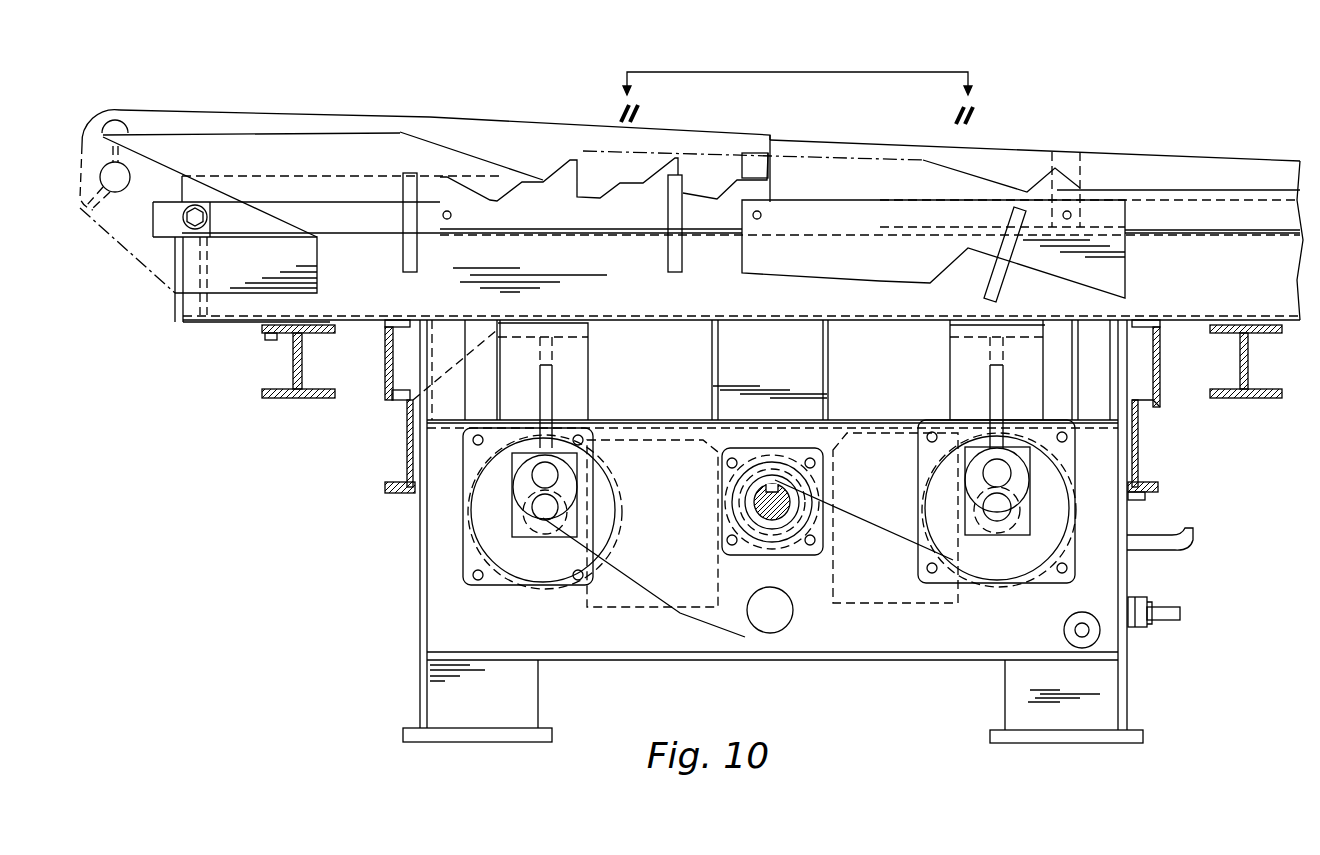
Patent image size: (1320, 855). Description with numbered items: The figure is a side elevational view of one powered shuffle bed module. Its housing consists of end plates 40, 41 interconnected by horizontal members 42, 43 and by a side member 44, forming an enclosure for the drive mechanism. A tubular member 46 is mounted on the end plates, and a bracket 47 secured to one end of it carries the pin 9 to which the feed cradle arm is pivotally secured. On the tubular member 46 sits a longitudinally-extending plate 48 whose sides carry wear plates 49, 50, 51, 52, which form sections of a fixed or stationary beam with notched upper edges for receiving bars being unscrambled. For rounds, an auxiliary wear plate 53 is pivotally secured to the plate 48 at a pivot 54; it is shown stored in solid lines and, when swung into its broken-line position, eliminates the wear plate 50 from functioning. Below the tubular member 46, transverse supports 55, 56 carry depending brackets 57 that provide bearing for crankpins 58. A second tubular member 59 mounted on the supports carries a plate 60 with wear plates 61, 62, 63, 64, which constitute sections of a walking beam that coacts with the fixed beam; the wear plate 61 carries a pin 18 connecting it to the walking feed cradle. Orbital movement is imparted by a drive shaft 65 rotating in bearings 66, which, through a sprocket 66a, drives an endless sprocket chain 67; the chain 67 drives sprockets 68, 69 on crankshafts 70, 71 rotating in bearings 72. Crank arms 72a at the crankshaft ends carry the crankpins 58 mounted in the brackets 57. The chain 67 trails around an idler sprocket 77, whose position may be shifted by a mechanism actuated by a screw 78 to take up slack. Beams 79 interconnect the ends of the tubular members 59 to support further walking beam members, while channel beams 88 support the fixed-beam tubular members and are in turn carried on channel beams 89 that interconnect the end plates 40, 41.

The pin 9 is at (115, 187).
The pin 18 is at (123, 122).
The end plate 40 is at (418, 610).
The end plate 41 is at (1128, 583).
The horizontal member 42 is at (642, 422).
The horizontal member 43 is at (645, 663).
The side member 44 is at (895, 630).
The tubular member 46 is at (362, 303).
The bracket 47 is at (153, 255).
The longitudinally-extending plate 48 is at (302, 198).
The wear plate 49 is at (250, 132).
The wear plate 50 is at (490, 200).
The wear plate 51 is at (827, 157).
The wear plate 52 is at (1107, 188).
The auxiliary wear plate 53 is at (512, 177).
The pivot 54 is at (758, 212).
The support 55 is at (590, 327).
The support 56 is at (950, 332).
The depending bracket 57 is at (588, 393).
The crankpin 58 is at (537, 473).
The second tubular member 59 is at (240, 323).
The longitudinally-extending plate 60 is at (277, 175).
The wear plate 61 is at (405, 115).
The wear plate 62 is at (478, 122).
The wear plate 63 is at (890, 143).
The wear plate 64 is at (1182, 153).
The drive shaft 65 is at (777, 515).
The bearing 66 is at (748, 532).
The sprocket 66a is at (823, 540).
The sprocket chain 67 is at (703, 617).
The sprocket 68 is at (585, 605).
The sprocket 69 is at (1005, 580).
The crankshaft 70 is at (543, 518).
The crankshaft 71 is at (1007, 503).
The bearing 72 is at (567, 532).
The crank arm 72a is at (513, 530).
The idler sprocket 77 is at (742, 602).
The screw 78 is at (1167, 607).
The beam 79 is at (290, 367).
The channel beam 88 is at (387, 370).
The channel beam 89 is at (400, 438).